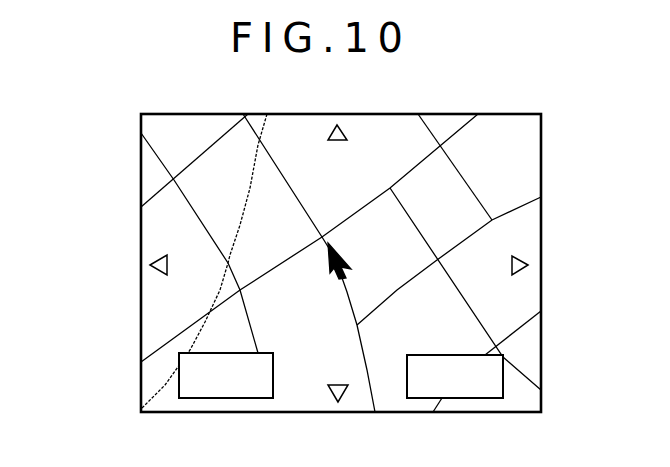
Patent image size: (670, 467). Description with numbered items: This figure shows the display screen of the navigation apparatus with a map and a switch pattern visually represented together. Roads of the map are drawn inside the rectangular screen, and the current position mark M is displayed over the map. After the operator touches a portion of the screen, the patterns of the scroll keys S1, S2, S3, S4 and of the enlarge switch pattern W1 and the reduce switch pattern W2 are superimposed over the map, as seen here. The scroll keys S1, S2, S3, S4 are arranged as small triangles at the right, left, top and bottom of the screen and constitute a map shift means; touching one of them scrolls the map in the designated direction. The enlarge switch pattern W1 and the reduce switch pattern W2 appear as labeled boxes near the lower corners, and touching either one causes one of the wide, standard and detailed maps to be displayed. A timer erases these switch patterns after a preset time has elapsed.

The scroll key S1 is at (517, 261).
The scroll key S2 is at (153, 263).
The scroll key S3 is at (340, 125).
The scroll key S4 is at (347, 390).
The enlarge switch pattern W1 is at (178, 366).
The reduce switch pattern W2 is at (508, 378).
The current position mark M is at (333, 265).